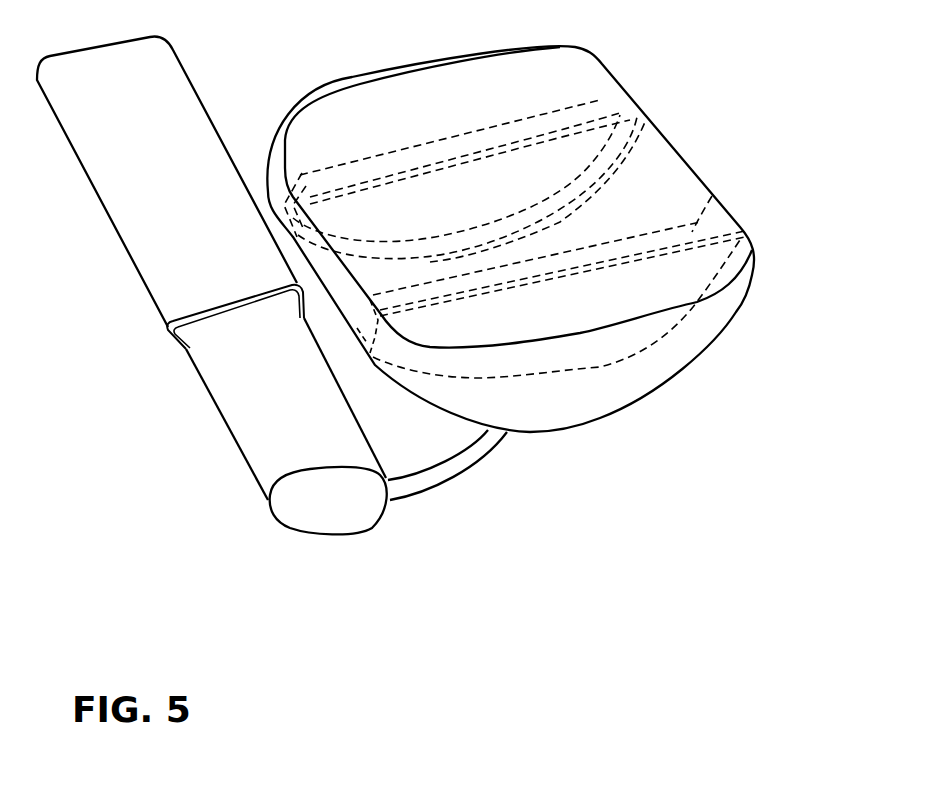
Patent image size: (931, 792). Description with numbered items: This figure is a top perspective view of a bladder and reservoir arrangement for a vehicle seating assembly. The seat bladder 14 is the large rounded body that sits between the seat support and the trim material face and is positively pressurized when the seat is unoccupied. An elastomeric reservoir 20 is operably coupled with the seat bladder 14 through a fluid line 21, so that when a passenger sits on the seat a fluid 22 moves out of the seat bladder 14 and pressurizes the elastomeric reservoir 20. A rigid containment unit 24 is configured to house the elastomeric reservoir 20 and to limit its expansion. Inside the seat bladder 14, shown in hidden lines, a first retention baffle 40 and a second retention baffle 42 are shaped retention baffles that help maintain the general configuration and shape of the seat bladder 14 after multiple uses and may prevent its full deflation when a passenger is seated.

The seat bladder 14 is at (613, 395).
The elastomeric reservoir 20 is at (317, 510).
The fluid line 21 is at (463, 473).
The fluid 22 is at (630, 207).
The rigid containment unit 24 is at (168, 278).
The first retention baffle 40 is at (600, 100).
The second retention baffle 42 is at (700, 222).